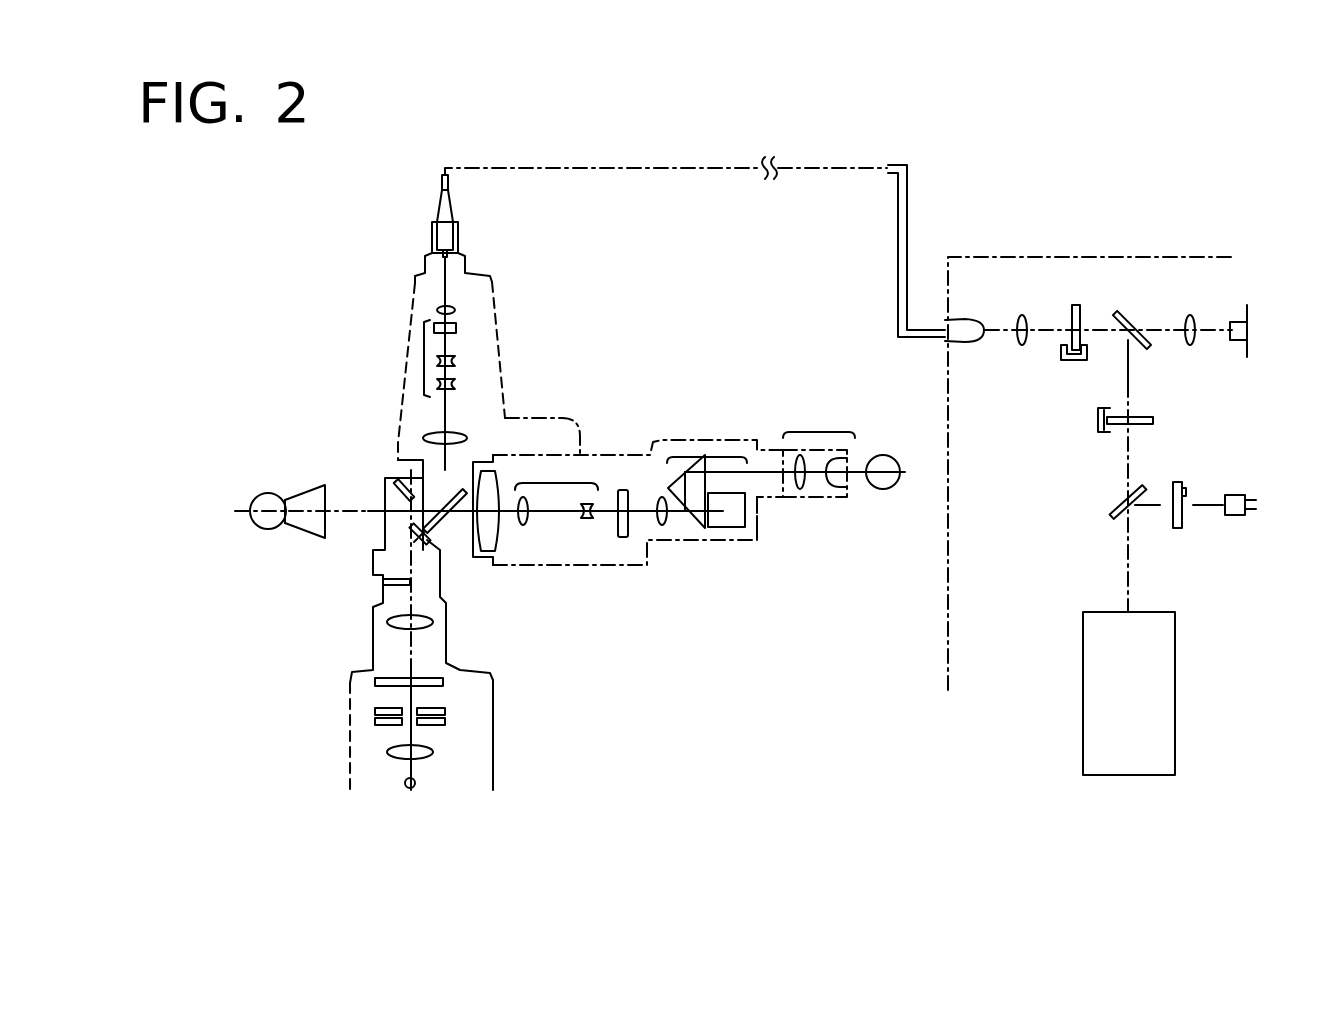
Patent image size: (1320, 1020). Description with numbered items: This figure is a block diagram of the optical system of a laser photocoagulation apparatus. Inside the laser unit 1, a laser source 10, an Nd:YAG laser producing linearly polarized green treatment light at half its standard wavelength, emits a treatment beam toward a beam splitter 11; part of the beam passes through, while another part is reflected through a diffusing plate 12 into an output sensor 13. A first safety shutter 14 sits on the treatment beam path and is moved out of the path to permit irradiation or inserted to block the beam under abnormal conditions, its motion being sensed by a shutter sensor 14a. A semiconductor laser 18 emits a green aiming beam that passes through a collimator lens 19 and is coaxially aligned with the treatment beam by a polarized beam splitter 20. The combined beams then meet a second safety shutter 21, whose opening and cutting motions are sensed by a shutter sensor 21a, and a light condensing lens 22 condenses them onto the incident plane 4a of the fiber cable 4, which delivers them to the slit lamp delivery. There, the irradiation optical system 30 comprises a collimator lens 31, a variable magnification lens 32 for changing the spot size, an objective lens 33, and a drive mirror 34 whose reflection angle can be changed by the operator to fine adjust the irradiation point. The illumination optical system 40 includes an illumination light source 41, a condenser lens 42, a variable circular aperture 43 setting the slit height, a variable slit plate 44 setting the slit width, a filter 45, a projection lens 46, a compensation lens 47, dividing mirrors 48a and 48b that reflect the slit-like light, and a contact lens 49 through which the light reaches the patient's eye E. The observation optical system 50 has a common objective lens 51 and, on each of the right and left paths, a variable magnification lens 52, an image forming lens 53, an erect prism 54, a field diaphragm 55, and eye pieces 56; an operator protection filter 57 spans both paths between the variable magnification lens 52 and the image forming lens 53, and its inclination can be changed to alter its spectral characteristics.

The laser unit 1 is at (1150, 257).
The fiber cable 4 is at (442, 208).
The incident plane 4a is at (984, 323).
The laser source 10 is at (1150, 647).
The beam splitter 11 is at (1110, 513).
The diffusing plate 12 is at (1180, 495).
The output sensor 13 is at (1237, 497).
The first safety shutter 14 is at (1143, 417).
The shutter sensor 14a is at (1100, 433).
The semiconductor laser 18 is at (1247, 320).
The collimator lens 19 is at (1198, 317).
The polarized beam splitter 20 is at (1127, 317).
The second safety shutter 21 is at (1073, 313).
The shutter sensor 21a is at (1077, 363).
The light condensing lens 22 is at (1020, 343).
The irradiation optical system 30 is at (514, 291).
The collimator lens 31 is at (440, 308).
The variable magnification lens 32 is at (423, 360).
The objective lens 33 is at (455, 437).
The drive mirror 34 is at (400, 476).
The illumination optical system 40 is at (596, 727).
The illumination light source 41 is at (420, 783).
The condenser lens 42 is at (433, 748).
The variable circular aperture 43 is at (445, 720).
The variable slit plate 44 is at (373, 711).
The filter 45 is at (375, 682).
The projection lens 46 is at (392, 622).
The compensation lens 47 is at (385, 582).
The dividing mirror 48a is at (428, 543).
The dividing mirror 48b is at (395, 478).
The contact lens 49 is at (300, 502).
The observation optical system 50 is at (662, 414).
The objective lens 51 is at (490, 470).
The variable magnification lens 52 is at (557, 483).
The image forming lens 53 is at (658, 527).
The erect prism 54 is at (707, 448).
The field diaphragm 55 is at (782, 497).
The eye pieces 56 is at (820, 430).
The operator protection filter 57 is at (627, 537).
The patient's eye E is at (270, 528).